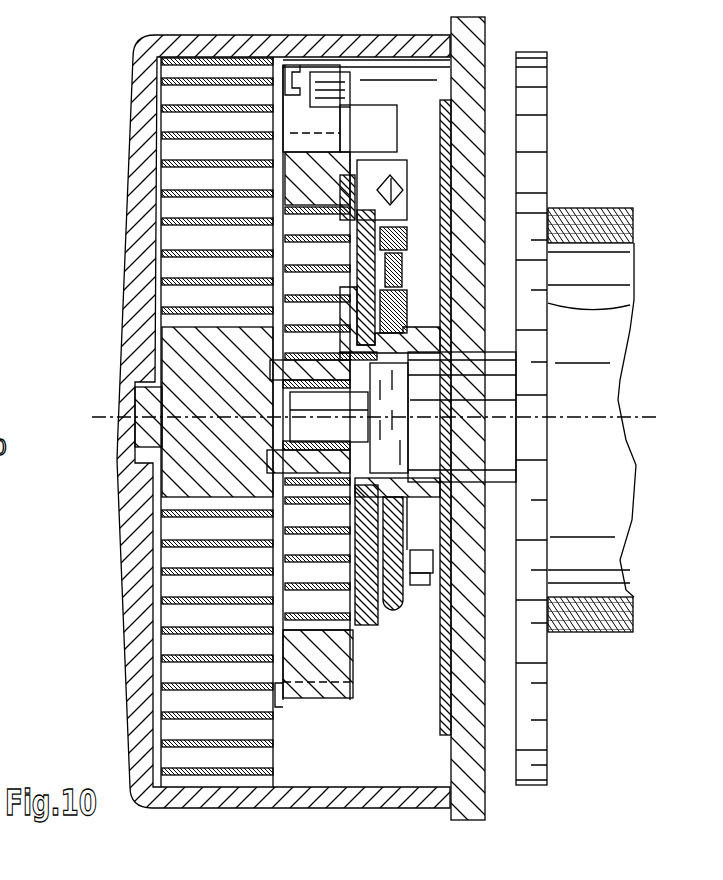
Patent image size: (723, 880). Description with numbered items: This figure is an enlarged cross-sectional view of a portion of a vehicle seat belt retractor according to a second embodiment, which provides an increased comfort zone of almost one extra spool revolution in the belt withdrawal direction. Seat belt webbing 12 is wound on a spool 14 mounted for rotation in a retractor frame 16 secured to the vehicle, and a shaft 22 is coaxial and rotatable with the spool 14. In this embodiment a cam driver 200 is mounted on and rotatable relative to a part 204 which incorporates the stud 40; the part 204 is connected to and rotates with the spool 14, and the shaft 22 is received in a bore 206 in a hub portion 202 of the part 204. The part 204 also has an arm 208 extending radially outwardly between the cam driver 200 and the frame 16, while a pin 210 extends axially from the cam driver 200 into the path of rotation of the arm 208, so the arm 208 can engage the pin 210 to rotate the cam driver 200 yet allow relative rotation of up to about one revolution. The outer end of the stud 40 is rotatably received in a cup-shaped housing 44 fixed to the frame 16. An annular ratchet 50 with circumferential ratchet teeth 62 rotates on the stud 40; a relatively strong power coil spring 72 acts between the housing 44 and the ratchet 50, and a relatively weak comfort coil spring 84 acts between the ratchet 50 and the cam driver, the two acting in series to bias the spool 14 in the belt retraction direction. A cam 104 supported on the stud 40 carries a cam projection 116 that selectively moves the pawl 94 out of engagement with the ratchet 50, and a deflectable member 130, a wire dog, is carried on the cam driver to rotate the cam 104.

The seat belt webbing 12 is at (598, 622).
The spool 14 is at (600, 505).
The retractor frame 16 is at (473, 40).
The shaft 22 is at (490, 402).
The stud 40 is at (190, 405).
The housing 44 is at (300, 33).
The ratchet 50 is at (302, 702).
The ratchet teeth 62 is at (343, 640).
The power coil spring 72 is at (292, 128).
The comfort coil spring 84 is at (305, 565).
The pawl 94 is at (368, 128).
The cam 104 is at (370, 628).
The cam projection 116 is at (408, 180).
The deflectable member 130 is at (397, 218).
The cam driver 200 is at (395, 612).
The hub portion 202 is at (283, 455).
The part 204 is at (460, 345).
The bore 206 is at (405, 470).
The arm 208 is at (445, 633).
The pin 210 is at (437, 565).